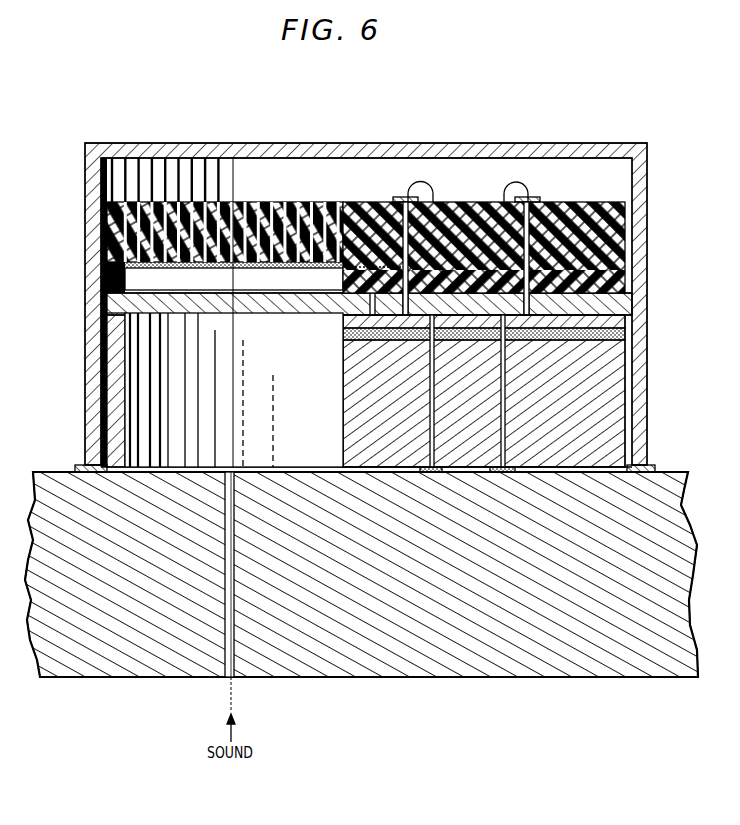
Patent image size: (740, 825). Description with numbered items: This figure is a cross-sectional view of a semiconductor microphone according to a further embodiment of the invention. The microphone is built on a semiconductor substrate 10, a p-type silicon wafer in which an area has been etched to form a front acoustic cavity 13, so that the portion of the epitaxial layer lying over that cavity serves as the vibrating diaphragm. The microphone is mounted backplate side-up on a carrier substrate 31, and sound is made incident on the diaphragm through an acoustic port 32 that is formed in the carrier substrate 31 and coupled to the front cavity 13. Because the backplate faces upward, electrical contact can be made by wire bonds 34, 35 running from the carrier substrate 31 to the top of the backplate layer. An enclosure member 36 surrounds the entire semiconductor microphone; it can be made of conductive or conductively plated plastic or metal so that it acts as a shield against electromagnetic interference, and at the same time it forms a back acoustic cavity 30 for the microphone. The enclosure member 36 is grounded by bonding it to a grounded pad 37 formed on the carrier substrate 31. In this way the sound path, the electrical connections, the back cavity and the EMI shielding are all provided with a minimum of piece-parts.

The semiconductor substrate 10 is at (610, 378).
The front acoustic cavity 13 is at (158, 364).
The back acoustic cavity 30 is at (209, 173).
The carrier substrate 31 is at (672, 500).
The acoustic port 32 is at (225, 677).
The wire bond 34 is at (426, 189).
The wire bond 35 is at (519, 185).
The enclosure member 36 is at (647, 270).
The grounded pad 37 is at (85, 465).